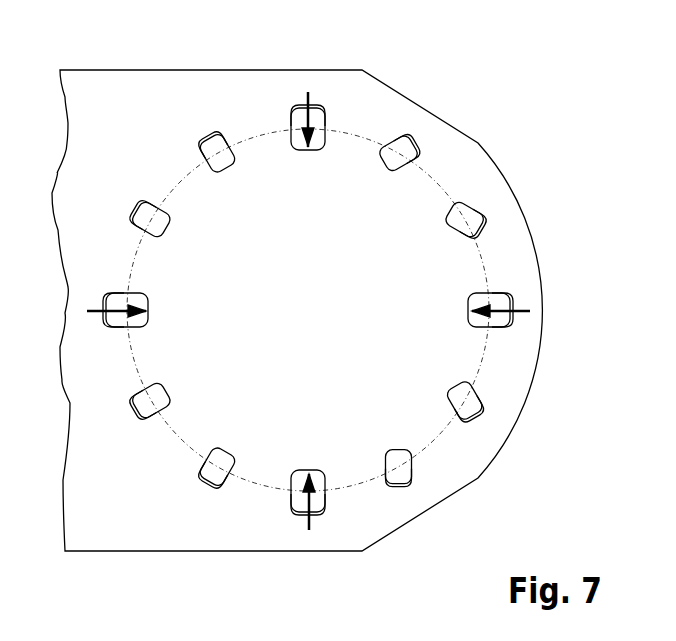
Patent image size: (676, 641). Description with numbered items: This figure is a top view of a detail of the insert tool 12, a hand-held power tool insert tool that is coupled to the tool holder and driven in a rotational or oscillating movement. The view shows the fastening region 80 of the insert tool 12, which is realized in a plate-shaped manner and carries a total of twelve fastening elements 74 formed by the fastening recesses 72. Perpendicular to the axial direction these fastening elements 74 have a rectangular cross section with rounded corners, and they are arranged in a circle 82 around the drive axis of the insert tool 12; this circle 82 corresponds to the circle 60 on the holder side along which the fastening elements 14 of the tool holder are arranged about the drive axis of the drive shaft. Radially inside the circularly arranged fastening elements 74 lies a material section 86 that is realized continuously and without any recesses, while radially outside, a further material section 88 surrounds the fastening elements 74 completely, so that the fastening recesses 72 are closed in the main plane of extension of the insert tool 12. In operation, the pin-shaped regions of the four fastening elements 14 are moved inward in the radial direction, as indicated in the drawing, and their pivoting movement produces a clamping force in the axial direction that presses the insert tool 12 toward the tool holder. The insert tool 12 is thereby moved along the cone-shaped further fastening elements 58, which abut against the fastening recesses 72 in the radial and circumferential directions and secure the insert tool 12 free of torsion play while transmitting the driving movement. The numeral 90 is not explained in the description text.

The insert tool 12 is at (498, 423).
The fastening element 14 is at (323, 114).
The further fastening element 58 is at (139, 410).
The circle 60 is at (308, 254).
The circle 82 is at (255, 140).
The fastening recess 72 is at (415, 140).
The fastening element 74 is at (527, 110).
The fastening region 80 is at (508, 367).
The material section 86 is at (500, 277).
The surface 90 is at (347, 300).
The further material section 88 is at (505, 235).